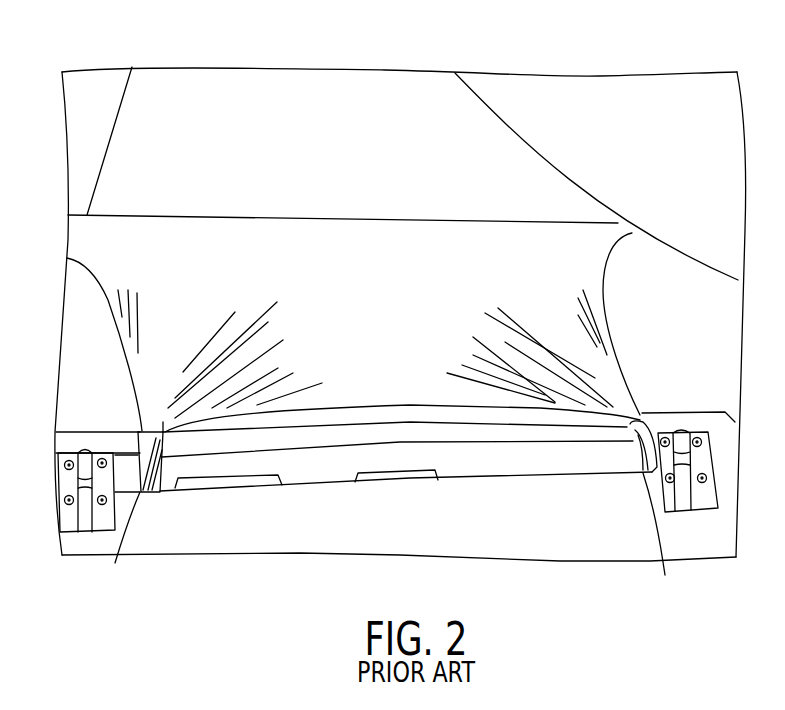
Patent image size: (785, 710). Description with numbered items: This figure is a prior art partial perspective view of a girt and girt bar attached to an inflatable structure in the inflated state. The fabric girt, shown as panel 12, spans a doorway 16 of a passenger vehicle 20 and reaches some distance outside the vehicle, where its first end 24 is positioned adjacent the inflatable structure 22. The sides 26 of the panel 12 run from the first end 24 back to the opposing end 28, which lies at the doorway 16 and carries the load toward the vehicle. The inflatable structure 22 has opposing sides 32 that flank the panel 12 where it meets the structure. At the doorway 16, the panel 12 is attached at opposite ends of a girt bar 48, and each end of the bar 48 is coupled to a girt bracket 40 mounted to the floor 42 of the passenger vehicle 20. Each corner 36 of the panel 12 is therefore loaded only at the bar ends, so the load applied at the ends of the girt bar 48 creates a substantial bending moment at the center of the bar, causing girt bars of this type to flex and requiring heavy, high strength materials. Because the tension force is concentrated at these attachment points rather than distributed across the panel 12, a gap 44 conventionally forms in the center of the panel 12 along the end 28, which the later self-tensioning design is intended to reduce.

The panel 12 is at (147, 227).
The doorway 16 is at (93, 430).
The passenger vehicle 20 is at (365, 542).
The inflatable structure 22 is at (480, 135).
The first end 24 is at (323, 218).
The sides 26 is at (103, 297).
The opposing end 28 is at (445, 408).
The opposing sides 32 is at (162, 72).
The corner 36 is at (389, 511).
The girt bracket 40 is at (83, 513).
The floor 42 is at (543, 508).
The gap 44 is at (388, 405).
The girt bar 48 is at (303, 465).